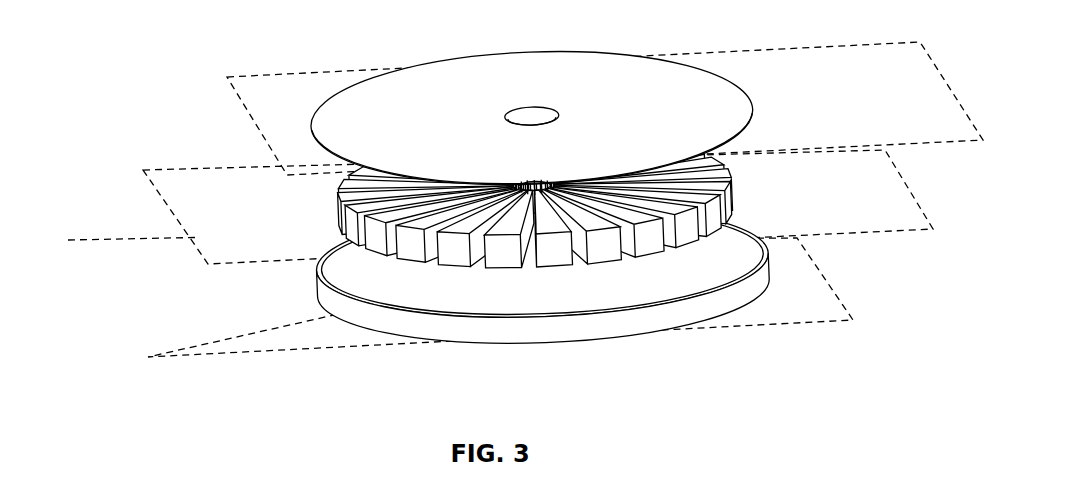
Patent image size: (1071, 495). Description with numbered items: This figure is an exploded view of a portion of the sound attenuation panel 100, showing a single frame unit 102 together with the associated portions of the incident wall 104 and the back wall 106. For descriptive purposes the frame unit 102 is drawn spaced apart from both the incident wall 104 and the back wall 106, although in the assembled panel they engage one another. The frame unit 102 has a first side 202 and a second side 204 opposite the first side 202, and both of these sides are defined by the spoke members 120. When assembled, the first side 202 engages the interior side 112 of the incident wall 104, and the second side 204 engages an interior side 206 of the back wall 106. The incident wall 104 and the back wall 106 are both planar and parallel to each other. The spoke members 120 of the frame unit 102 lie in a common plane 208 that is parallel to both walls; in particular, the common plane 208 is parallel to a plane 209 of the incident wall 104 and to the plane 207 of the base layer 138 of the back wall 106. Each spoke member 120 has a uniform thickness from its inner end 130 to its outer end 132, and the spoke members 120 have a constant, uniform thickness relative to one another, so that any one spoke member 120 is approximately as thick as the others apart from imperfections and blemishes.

The sound attenuation panel 100 is at (492, 212).
The frame unit 102 is at (519, 270).
The incident wall 104 is at (562, 115).
The back wall 106 is at (531, 307).
The interior side 112 is at (534, 184).
The spoke member 120 is at (466, 297).
The inner end 130 is at (533, 182).
The outer end 132 is at (600, 240).
The base layer 138 is at (544, 302).
The first side 202 is at (328, 112).
The second side 204 is at (643, 203).
The interior side 206 is at (313, 298).
The plane 207 is at (847, 325).
The common plane 208 is at (920, 232).
The plane 209 is at (973, 143).